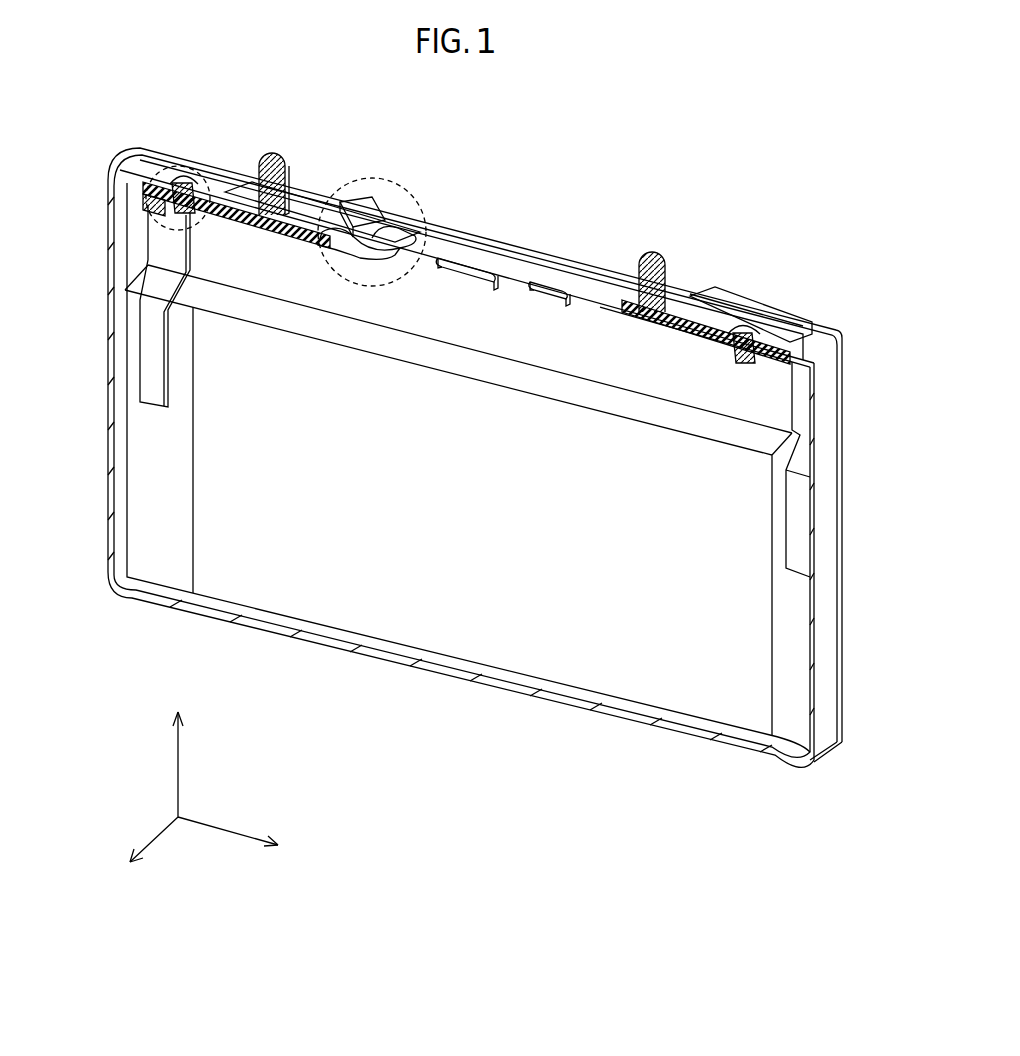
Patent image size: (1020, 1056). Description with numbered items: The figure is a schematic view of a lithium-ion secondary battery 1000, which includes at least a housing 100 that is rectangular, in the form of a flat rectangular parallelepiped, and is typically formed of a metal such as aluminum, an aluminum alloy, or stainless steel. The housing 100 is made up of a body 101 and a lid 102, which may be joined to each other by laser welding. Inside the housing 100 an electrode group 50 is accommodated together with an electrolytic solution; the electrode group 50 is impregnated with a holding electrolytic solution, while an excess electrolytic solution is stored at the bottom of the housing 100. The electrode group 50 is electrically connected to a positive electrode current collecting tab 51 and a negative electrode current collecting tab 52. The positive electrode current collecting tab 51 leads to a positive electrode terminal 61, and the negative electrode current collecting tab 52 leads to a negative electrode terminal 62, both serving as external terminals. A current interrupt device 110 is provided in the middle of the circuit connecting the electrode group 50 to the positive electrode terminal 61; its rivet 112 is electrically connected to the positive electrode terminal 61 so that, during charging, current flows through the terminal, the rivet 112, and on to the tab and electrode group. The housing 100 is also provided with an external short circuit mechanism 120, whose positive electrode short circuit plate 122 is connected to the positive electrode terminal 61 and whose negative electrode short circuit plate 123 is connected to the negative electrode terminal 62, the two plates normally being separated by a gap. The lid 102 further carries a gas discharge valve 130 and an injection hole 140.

The battery 1000 is at (648, 146).
The housing 100 is at (772, 252).
The body 101 is at (842, 362).
The lid 102 is at (824, 337).
The electrode group 50 is at (379, 486).
The positive electrode current collecting tab 51 is at (150, 348).
The negative electrode current collecting tab 52 is at (795, 528).
The positive electrode terminal 61 is at (276, 153).
The negative electrode terminal 62 is at (652, 252).
The current interrupt device 110 is at (161, 234).
The rivet 112 is at (182, 185).
The external short circuit mechanism 120 is at (405, 178).
The positive electrode short circuit plate 122 is at (346, 203).
The negative electrode short circuit plate 123 is at (407, 220).
The gas discharge valve 130 is at (487, 265).
The injection hole 140 is at (565, 288).